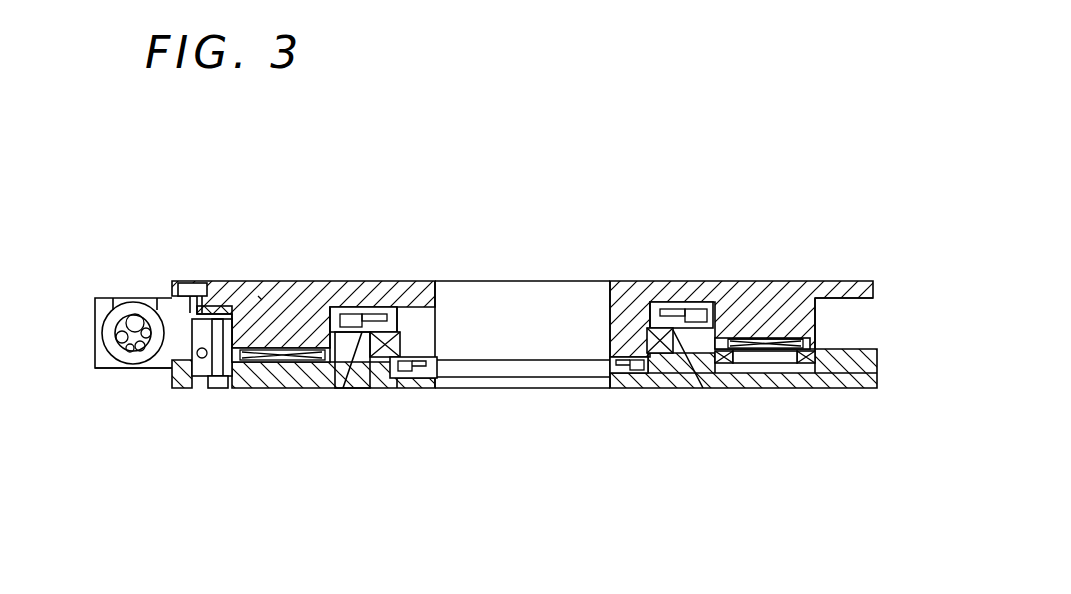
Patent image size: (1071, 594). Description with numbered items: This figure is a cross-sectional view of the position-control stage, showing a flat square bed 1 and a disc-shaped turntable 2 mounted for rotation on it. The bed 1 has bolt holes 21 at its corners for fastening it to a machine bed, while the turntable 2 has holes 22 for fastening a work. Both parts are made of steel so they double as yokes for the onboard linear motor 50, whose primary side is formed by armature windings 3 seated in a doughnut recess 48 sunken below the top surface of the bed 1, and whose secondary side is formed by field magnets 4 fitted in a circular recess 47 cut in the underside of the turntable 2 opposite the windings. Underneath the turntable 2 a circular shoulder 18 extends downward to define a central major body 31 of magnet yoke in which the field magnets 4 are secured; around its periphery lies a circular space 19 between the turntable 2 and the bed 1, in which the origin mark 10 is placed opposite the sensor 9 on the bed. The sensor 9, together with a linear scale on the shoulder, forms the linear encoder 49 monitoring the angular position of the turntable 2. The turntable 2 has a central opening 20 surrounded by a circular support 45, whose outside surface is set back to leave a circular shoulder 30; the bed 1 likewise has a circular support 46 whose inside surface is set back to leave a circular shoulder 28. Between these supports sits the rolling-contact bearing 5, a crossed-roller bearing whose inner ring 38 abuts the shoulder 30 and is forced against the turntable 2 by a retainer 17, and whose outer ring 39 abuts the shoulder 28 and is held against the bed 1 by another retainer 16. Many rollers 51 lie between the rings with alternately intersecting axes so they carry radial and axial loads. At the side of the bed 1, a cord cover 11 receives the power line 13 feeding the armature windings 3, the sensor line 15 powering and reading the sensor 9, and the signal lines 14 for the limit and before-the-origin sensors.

The bed 1 is at (285, 378).
The turntable 2 is at (310, 300).
The armature winding 3 is at (724, 363).
The field magnet 4 is at (275, 325).
The rolling-contact bearing 5 is at (385, 358).
The sensor 9 is at (199, 358).
The origin mark 10 is at (216, 283).
The cord cover 11 is at (96, 298).
The power line 13 is at (133, 302).
The signal lines 14 is at (148, 360).
The sensor line 15 is at (110, 368).
The retainer 16 is at (372, 308).
The retainer 17 is at (440, 378).
The circular shoulder 18 is at (850, 292).
The circular space 19 is at (830, 330).
The opening 20 is at (612, 300).
The bolt hole 21 is at (218, 380).
The hole 22 is at (190, 283).
The circular shoulder 28 is at (368, 360).
The circular shoulder 30 is at (410, 343).
The central major body 31 is at (260, 300).
The inner ring 38 is at (410, 373).
The outer ring 39 is at (357, 350).
The circular support 45 is at (625, 325).
The circular support 46 is at (350, 332).
The circular recess 47 is at (260, 360).
The doughnut recess 48 is at (300, 365).
The linear encoder 49 is at (226, 305).
The linear motor 50 is at (805, 345).
The rollers 51 is at (395, 312).